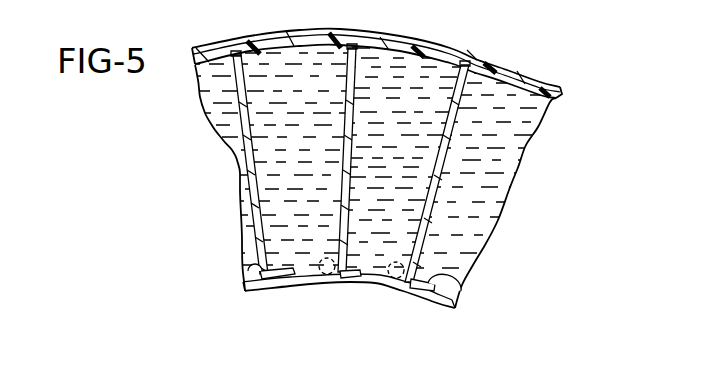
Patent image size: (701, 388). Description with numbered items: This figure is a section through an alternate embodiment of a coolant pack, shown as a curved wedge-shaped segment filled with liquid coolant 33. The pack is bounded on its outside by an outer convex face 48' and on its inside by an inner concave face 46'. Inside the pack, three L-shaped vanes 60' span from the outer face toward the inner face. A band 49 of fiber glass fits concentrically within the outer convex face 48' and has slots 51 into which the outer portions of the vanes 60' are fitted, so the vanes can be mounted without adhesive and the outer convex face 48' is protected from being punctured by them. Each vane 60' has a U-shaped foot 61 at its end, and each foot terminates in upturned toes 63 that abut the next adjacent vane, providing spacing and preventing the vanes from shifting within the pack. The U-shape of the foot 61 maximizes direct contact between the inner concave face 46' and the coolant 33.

The liquid coolant 33 is at (497, 163).
The inner concave face 46' is at (333, 304).
The outer convex face 48' is at (390, 63).
The band 49 is at (536, 102).
The slots 51 is at (250, 44).
The vanes 60' is at (389, 163).
The U-shaped foot 61 is at (283, 267).
The upturned toes 63 is at (240, 258).